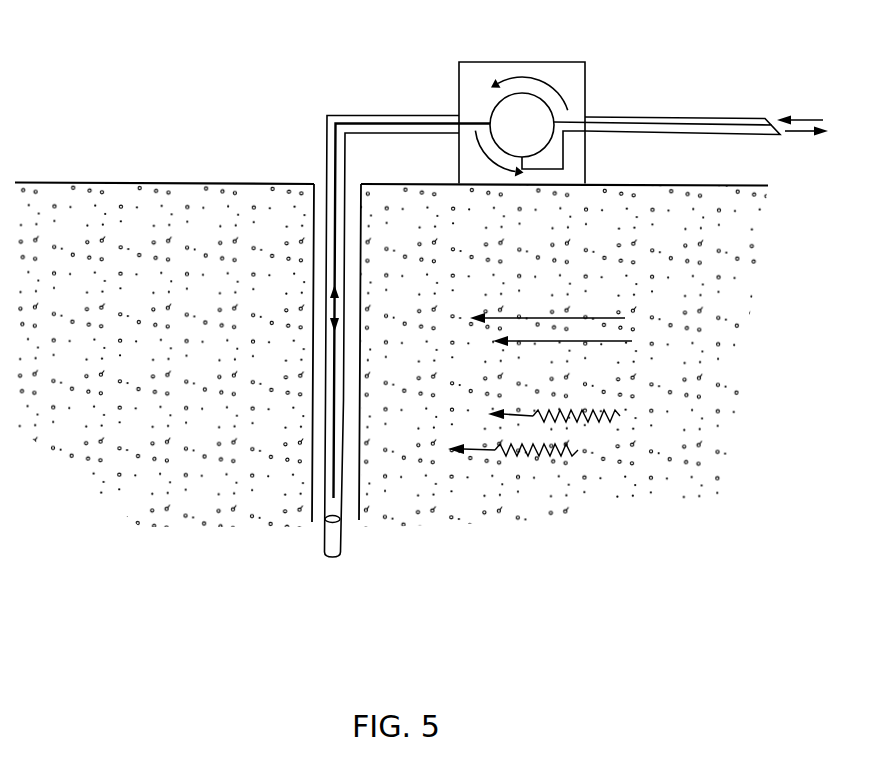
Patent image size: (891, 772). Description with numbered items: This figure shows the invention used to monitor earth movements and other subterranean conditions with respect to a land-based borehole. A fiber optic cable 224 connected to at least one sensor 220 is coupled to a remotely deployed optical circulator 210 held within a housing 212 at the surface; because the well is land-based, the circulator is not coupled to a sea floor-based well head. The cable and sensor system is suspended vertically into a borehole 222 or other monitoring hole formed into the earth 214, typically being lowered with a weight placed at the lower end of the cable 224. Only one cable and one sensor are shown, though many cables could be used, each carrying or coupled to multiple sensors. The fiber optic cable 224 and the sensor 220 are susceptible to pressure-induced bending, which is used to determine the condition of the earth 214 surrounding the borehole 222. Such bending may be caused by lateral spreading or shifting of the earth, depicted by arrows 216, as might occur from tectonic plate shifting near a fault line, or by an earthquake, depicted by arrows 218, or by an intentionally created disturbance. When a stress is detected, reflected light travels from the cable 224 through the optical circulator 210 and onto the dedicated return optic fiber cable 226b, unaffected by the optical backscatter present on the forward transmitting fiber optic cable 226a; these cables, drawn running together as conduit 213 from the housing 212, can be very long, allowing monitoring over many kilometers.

The optical circulator 210 is at (508, 110).
The housing 212 is at (562, 62).
The conduit 213 is at (630, 117).
The earth 214 is at (677, 184).
The arrows 216 is at (625, 318).
The arrows 218 is at (587, 420).
The sensor 220 is at (337, 547).
The borehole 222 is at (315, 483).
The fiber optic cable 224 is at (362, 116).
The forward transmitting fiber optic cable 226a is at (793, 108).
The return optic fiber cable 226b is at (793, 132).